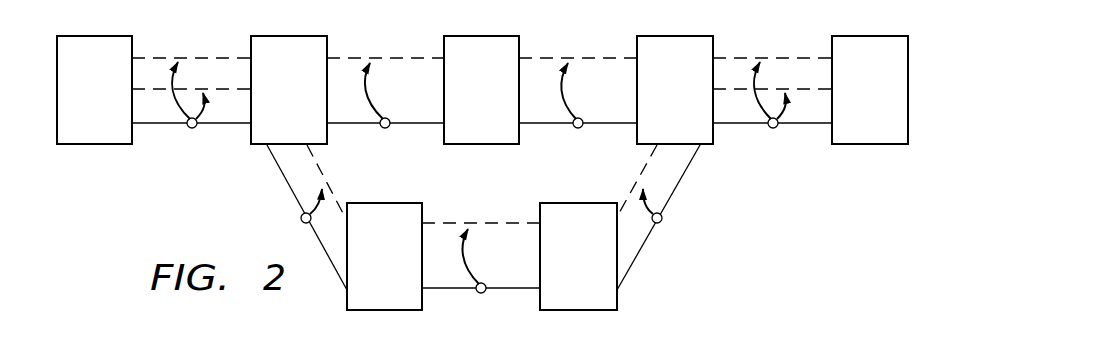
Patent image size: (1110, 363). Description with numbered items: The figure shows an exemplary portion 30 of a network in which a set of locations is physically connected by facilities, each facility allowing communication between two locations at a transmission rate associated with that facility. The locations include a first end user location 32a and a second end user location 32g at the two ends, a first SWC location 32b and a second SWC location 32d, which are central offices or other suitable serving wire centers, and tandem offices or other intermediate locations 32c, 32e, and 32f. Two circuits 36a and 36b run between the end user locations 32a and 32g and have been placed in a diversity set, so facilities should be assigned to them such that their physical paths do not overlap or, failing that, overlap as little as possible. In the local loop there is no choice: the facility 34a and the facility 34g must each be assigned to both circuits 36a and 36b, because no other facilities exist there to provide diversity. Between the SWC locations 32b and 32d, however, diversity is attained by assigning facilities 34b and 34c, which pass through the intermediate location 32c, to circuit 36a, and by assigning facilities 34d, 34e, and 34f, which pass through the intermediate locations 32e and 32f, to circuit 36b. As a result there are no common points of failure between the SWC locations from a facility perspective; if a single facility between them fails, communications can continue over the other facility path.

The portion of a network 30 is at (768, 240).
The first end user location 32a is at (117, 103).
The first SWC location 32b is at (309, 103).
The intermediate location 32c is at (502, 103).
The second SWC location 32d is at (695, 103).
The intermediate location 32e is at (405, 270).
The intermediate location 32f is at (599, 270).
The second end user location 32g is at (890, 103).
The facility 34a is at (217, 125).
The facility 34b is at (428, 125).
The facility 34c is at (537, 125).
The facility 34d is at (290, 188).
The facility 34e is at (508, 292).
The facility 34f is at (643, 250).
The facility 34g is at (795, 125).
The first circuit 36a is at (158, 57).
The second circuit 36b is at (220, 90).